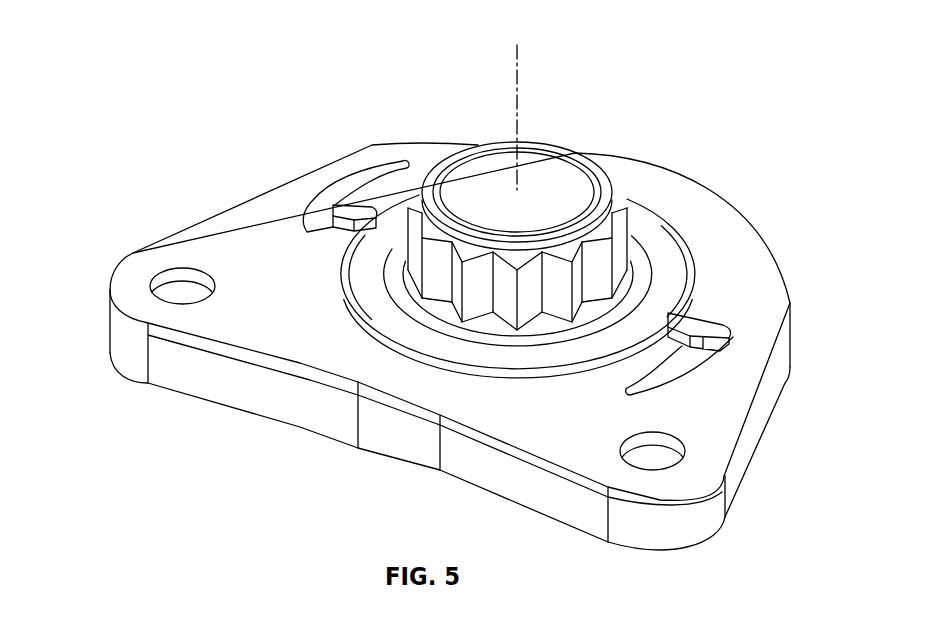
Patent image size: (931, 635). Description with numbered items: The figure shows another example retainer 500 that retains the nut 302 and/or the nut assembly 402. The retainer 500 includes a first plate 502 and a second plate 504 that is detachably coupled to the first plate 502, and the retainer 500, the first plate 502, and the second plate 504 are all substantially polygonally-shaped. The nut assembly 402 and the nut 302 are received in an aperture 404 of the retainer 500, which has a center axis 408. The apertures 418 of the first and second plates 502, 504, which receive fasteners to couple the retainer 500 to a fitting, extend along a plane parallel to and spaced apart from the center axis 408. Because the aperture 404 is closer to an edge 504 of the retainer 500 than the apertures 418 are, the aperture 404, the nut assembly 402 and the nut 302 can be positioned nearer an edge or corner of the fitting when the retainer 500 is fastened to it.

The retainer 500 is at (214, 76).
The first plate 502 is at (125, 363).
The second plate 504 is at (113, 303).
The apertures 418 is at (189, 276).
The center axis 408 is at (517, 87).
The aperture 404 is at (660, 243).
The nut 302 is at (612, 206).
The nut assembly 402 is at (560, 133).